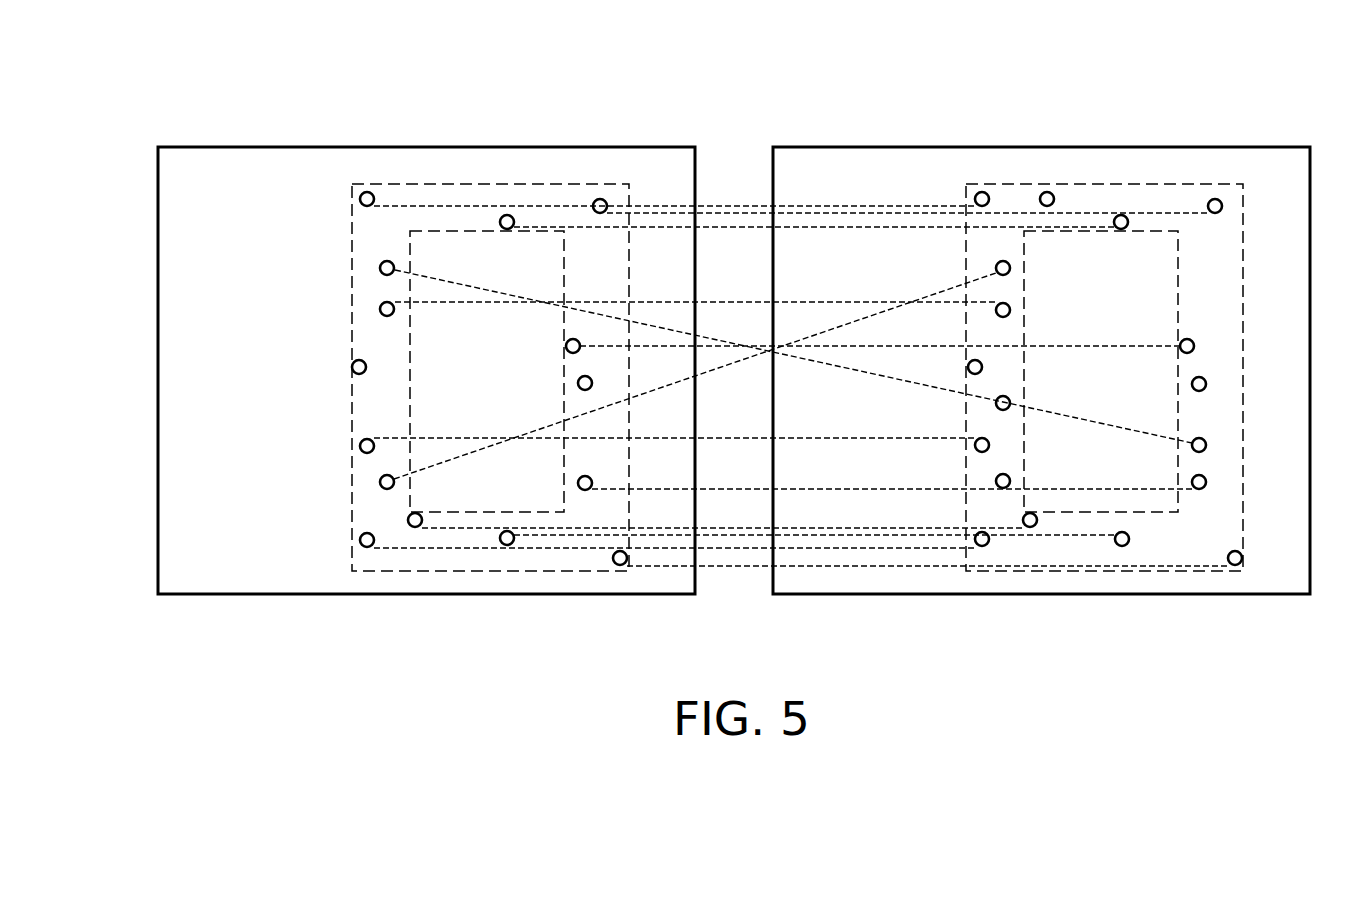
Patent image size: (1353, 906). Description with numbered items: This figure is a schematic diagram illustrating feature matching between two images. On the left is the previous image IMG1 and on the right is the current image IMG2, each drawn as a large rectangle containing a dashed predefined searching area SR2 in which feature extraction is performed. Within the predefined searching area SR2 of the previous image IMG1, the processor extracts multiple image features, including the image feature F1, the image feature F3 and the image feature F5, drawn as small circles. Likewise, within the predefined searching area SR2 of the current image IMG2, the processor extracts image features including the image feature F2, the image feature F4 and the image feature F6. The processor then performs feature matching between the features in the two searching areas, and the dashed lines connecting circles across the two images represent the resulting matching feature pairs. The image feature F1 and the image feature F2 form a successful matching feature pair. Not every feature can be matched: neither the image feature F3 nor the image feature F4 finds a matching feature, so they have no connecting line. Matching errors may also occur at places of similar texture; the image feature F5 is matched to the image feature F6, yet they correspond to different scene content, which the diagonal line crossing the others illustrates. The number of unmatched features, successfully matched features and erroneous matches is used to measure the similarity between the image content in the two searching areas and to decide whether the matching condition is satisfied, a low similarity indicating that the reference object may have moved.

The previous image IMG1 is at (258, 146).
The current image IMG2 is at (905, 146).
The predefined searching area SR2 is at (502, 184).
The image feature F1 is at (367, 191).
The image feature F2 is at (982, 191).
The image feature F3 is at (353, 361).
The image feature F4 is at (1045, 191).
The image feature F5 is at (380, 484).
The image feature F6 is at (1011, 268).